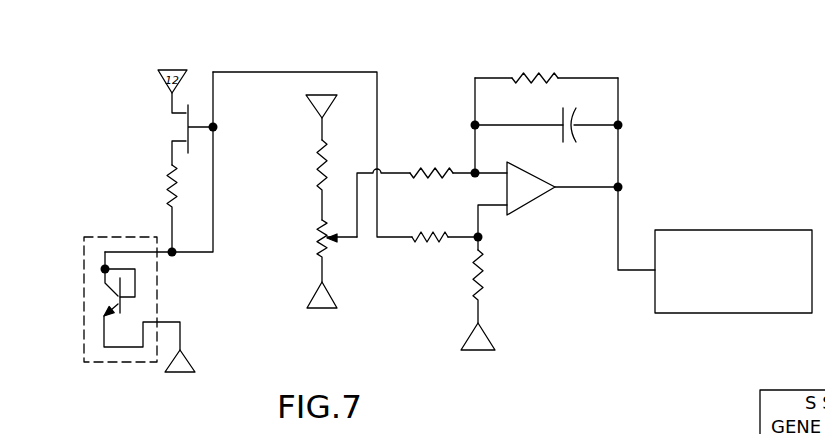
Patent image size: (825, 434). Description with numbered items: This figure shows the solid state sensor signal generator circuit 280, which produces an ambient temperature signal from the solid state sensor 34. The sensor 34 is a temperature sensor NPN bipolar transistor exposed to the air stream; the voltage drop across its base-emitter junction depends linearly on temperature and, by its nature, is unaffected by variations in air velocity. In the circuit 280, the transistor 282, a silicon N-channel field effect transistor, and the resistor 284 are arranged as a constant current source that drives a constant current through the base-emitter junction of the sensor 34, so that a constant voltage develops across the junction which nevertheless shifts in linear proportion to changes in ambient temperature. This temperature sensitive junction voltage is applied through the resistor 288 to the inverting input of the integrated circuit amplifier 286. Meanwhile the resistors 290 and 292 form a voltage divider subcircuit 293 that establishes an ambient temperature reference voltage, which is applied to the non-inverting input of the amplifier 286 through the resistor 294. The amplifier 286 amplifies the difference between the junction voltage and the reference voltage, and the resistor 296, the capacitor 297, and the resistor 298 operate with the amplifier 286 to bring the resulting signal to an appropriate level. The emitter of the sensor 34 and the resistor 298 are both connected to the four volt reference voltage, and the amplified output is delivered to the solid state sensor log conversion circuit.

The solid state sensor signal generator circuit 280 is at (653, 95).
The transistor 282 is at (150, 113).
The resistor 284 is at (166, 186).
The solid state sensor 34 is at (104, 232).
The integrated circuit amplifier 286 is at (529, 212).
The resistor 288 is at (431, 257).
The resistor 290 is at (322, 163).
The resistor 292 is at (322, 238).
The voltage divider subcircuit 293 is at (304, 263).
The resistor 294 is at (432, 170).
The resistor 296 is at (534, 75).
The capacitor 297 is at (574, 98).
The resistor 298 is at (483, 278).